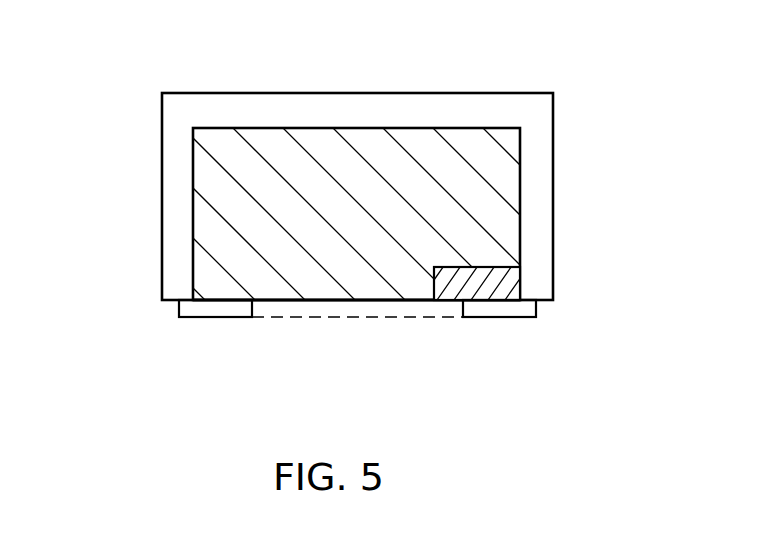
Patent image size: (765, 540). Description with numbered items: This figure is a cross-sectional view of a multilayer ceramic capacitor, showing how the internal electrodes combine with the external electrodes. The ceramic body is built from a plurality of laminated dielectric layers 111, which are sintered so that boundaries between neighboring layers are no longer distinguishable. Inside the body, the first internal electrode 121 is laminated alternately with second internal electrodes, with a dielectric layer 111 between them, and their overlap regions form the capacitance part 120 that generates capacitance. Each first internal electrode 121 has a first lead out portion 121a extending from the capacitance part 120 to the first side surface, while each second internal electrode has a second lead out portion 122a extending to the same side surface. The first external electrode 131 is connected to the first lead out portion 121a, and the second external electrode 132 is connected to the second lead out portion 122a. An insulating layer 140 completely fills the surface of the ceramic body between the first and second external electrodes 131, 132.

The dielectric layer 111 is at (358, 107).
The capacitance part 120 is at (358, 228).
The first internal electrode 121 is at (212, 191).
The first lead out portion 121a is at (208, 282).
The second lead out portion 122a is at (507, 283).
The first external electrode 131 is at (214, 308).
The second external electrode 132 is at (497, 308).
The insulating layer 140 is at (330, 307).